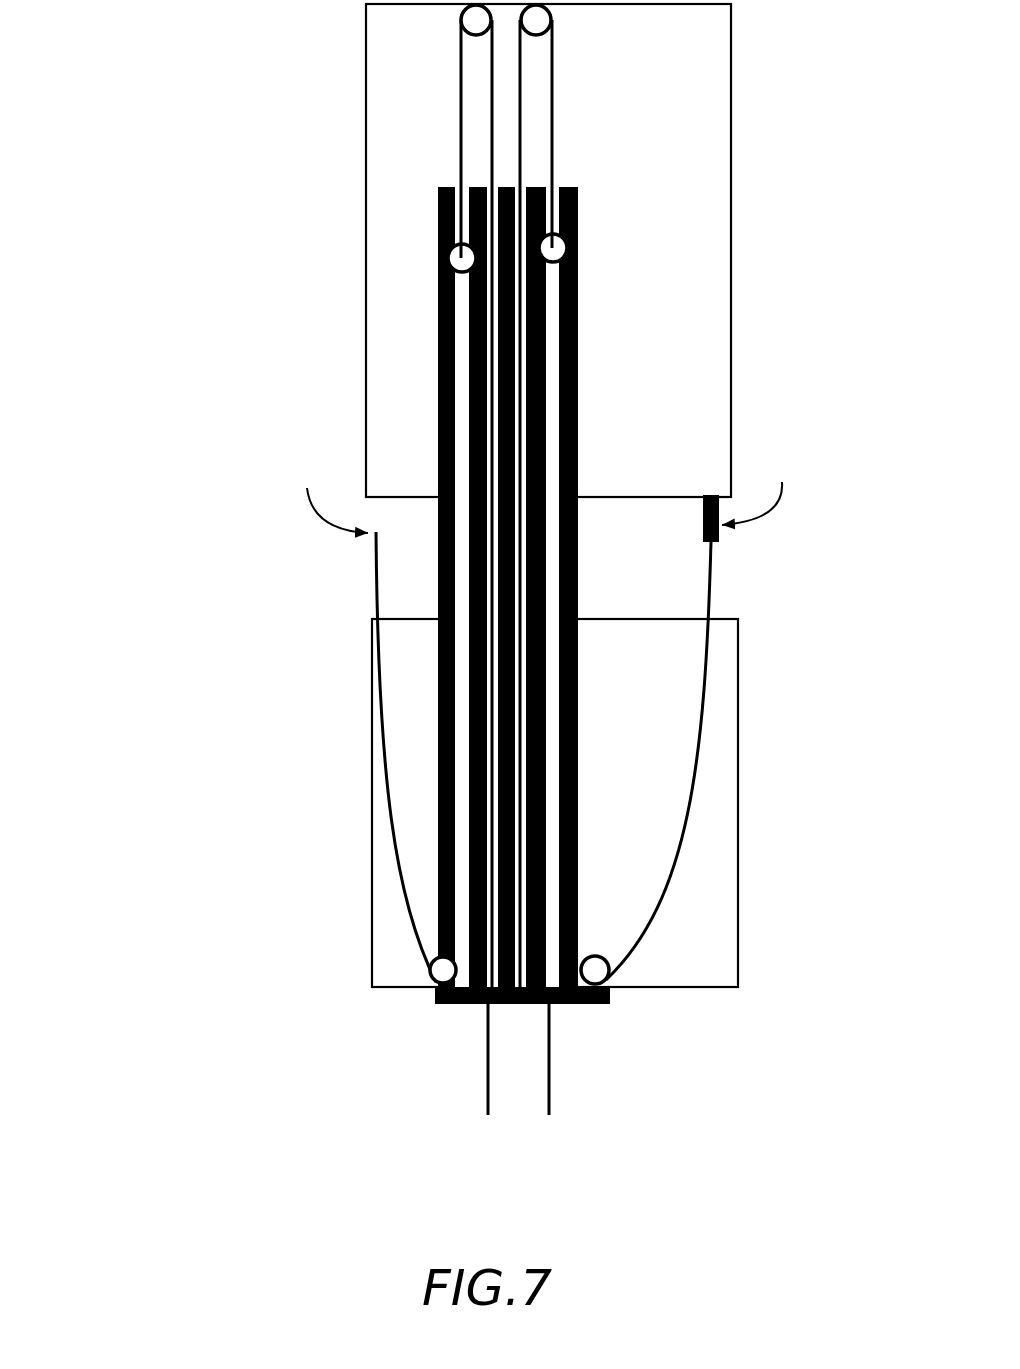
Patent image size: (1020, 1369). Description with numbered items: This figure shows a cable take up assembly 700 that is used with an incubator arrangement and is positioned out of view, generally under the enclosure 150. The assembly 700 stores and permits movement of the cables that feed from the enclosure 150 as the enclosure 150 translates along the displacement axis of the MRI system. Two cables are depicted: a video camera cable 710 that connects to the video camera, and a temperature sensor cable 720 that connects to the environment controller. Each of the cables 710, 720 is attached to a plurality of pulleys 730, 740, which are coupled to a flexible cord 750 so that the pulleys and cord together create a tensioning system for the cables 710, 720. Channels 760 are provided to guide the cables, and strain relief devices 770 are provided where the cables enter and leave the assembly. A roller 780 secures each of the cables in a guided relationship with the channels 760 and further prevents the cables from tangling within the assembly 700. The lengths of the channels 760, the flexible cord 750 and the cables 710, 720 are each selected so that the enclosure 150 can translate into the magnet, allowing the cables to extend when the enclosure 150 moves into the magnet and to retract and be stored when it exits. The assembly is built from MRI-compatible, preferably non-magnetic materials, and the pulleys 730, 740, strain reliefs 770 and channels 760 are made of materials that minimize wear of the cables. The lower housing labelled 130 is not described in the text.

The cable take up assembly 700 is at (542, 1211).
The enclosure 150 is at (733, 139).
The lower housing / enclosure 130 is at (745, 845).
The channels 760 is at (577, 773).
The flexible cord 750 is at (562, 95).
The pulleys 740 is at (437, 22).
The pulleys 730 is at (428, 265).
The video camera cable 710 is at (377, 732).
The temperature sensor cable 720 is at (707, 738).
The roller 780 is at (466, 1008).
The strain relief devices 770 is at (435, 952).